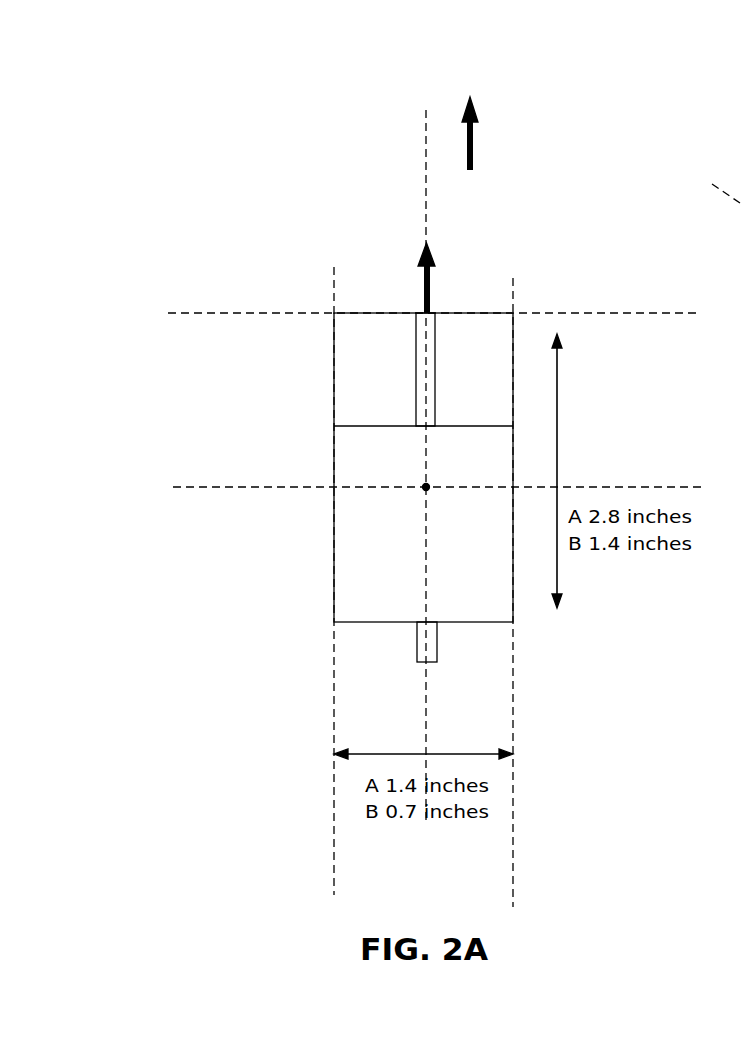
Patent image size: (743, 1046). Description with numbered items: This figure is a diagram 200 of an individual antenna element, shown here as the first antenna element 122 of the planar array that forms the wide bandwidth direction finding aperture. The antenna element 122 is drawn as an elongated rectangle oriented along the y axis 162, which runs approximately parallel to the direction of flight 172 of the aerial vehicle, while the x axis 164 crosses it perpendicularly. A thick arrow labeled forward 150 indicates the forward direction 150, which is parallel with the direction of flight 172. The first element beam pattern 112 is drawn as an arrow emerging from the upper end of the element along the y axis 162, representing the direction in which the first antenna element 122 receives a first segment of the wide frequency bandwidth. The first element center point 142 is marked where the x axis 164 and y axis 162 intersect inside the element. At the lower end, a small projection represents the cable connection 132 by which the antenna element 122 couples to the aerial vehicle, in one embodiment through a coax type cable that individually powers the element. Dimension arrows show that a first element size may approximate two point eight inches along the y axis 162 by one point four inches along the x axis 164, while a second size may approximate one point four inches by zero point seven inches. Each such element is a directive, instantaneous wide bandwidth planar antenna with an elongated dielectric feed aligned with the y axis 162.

The antenna assembly 200 is at (166, 116).
The first element beam pattern 112 is at (423, 280).
The first antenna element 122 is at (334, 547).
The cable connection 132 is at (415, 642).
The first element center point 142 is at (426, 487).
The forward direction 150 is at (527, 123).
The y axis 162 is at (423, 150).
The x axis 164 is at (201, 489).
The direction of flight 172 is at (572, 146).